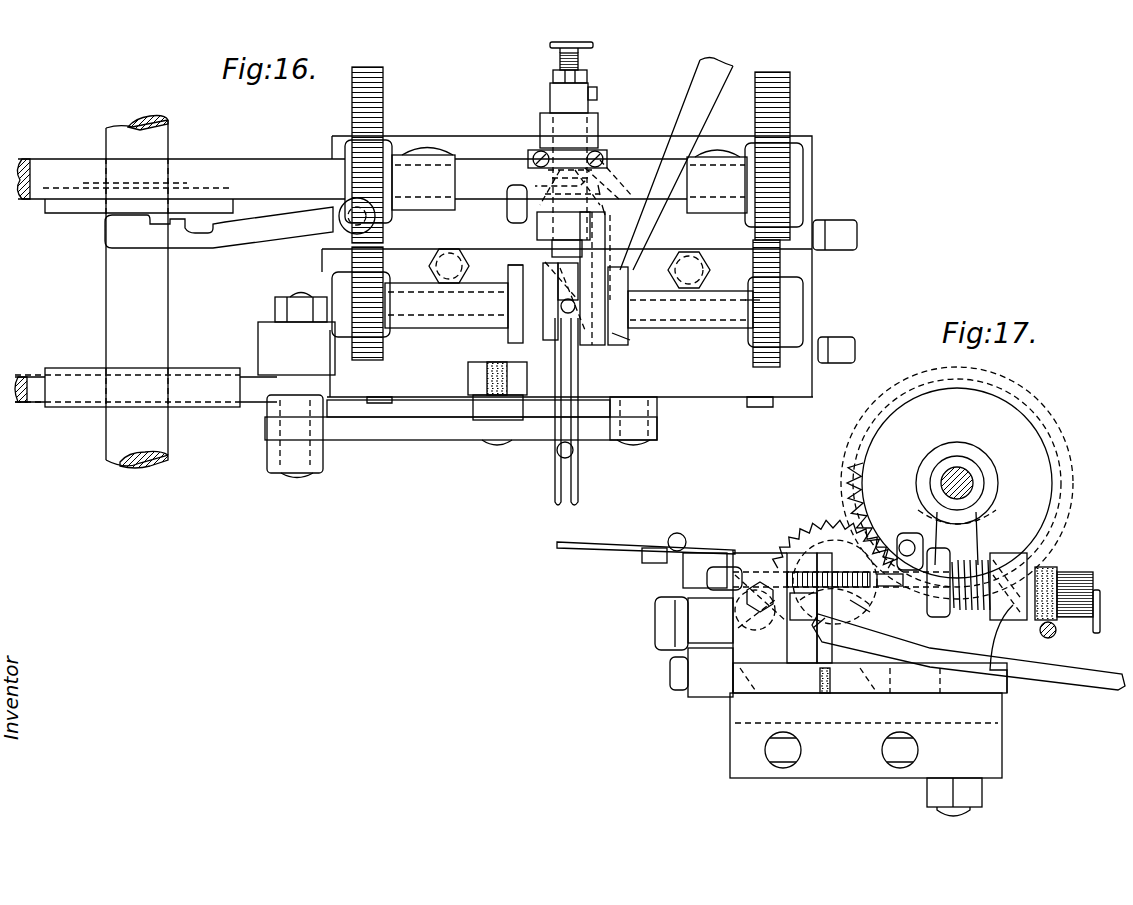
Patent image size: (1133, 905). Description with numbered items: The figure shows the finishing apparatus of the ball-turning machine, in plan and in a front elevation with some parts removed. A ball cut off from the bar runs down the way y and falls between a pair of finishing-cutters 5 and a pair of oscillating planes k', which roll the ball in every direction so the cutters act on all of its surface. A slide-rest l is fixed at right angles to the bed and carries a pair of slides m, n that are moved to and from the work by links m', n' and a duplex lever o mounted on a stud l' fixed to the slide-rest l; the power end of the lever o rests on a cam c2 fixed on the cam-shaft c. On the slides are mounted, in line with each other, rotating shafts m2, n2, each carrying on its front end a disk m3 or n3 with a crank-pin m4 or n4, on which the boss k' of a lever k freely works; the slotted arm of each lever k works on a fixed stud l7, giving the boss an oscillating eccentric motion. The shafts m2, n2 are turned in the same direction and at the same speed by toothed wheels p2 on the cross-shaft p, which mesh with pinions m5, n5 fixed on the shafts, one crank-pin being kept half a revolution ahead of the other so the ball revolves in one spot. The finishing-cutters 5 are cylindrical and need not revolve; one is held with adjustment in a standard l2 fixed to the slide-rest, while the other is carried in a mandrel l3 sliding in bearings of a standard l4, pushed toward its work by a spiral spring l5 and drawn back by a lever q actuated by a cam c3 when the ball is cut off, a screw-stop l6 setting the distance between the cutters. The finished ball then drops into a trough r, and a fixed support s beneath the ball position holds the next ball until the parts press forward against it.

In FIG. 16, the cam-shaft c is at (137, 292).
In FIG. 16, the cam c2 is at (127, 392).
In FIG. 16, the cam c3 is at (138, 198).
In FIG. 16, the duplex lever o is at (146, 389).
In FIG. 16, the cross-shaft p is at (352, 170).
In FIG. 17, the cross-shaft p is at (973, 481).
In FIG. 16, the toothed wheels p2 is at (580, 155).
In FIG. 17, the toothed wheels p2 is at (957, 483).
In FIG. 16, the lever q is at (240, 229).
In FIG. 16, the slide-rest l is at (561, 285).
In FIG. 17, the slide-rest l is at (866, 754).
In FIG. 16, the stud or axis l' is at (295, 446).
In FIG. 17, the stud or axis l' is at (657, 623).
In FIG. 17, the standard l2 is at (760, 621).
In FIG. 16, the mandrel l3 is at (567, 248).
In FIG. 17, the mandrel l3 is at (843, 579).
In FIG. 16, the standard l4 is at (552, 176).
In FIG. 17, the standard l4 is at (977, 620).
In FIG. 16, the spiral spring l5 is at (580, 137).
In FIG. 17, the spiral spring l5 is at (956, 538).
In FIG. 16, the screw-stop l6 is at (571, 44).
In FIG. 17, the screw-stop l6 is at (1067, 608).
In FIG. 16, the fixed stud l7 is at (556, 290).
In FIG. 17, the fixed stud l7 is at (833, 582).
In FIG. 16, the lever k is at (577, 278).
In FIG. 17, the lever k is at (840, 592).
In FIG. 16, the boss of lever / oscillating plane k' is at (561, 302).
In FIG. 17, the boss of lever / oscillating plane k' is at (833, 605).
In FIG. 16, the slide m is at (429, 333).
In FIG. 17, the slide m is at (870, 669).
In FIG. 16, the link m' is at (498, 407).
In FIG. 17, the link m' is at (701, 672).
In FIG. 16, the rotating shaft m2 is at (330, 294).
In FIG. 16, the disk m3 is at (505, 304).
In FIG. 17, the disk m3 is at (835, 568).
In FIG. 16, the crank-pin m4 is at (510, 254).
In FIG. 17, the crank-pin m4 is at (864, 615).
In FIG. 16, the toothed pinion m5 is at (367, 313).
In FIG. 17, the toothed pinion m5 is at (833, 564).
In FIG. 16, the slide n is at (690, 308).
In FIG. 16, the link n' is at (633, 421).
In FIG. 17, the link n' is at (712, 598).
In FIG. 16, the rotating shaft n2 is at (828, 302).
In FIG. 16, the disk n3 is at (621, 306).
In FIG. 16, the crank-pin n4 is at (633, 340).
In FIG. 16, the toothed pinion n5 is at (775, 303).
In FIG. 16, the trough r is at (676, 164).
In FIG. 17, the trough r is at (968, 652).
In FIG. 17, the support s is at (819, 642).
In FIG. 16, the way y is at (574, 411).
In FIG. 17, the way y is at (646, 539).
In FIG. 16, the finishing-cutters 5 is at (568, 303).
In FIG. 17, the finishing-cutters 5 is at (842, 607).